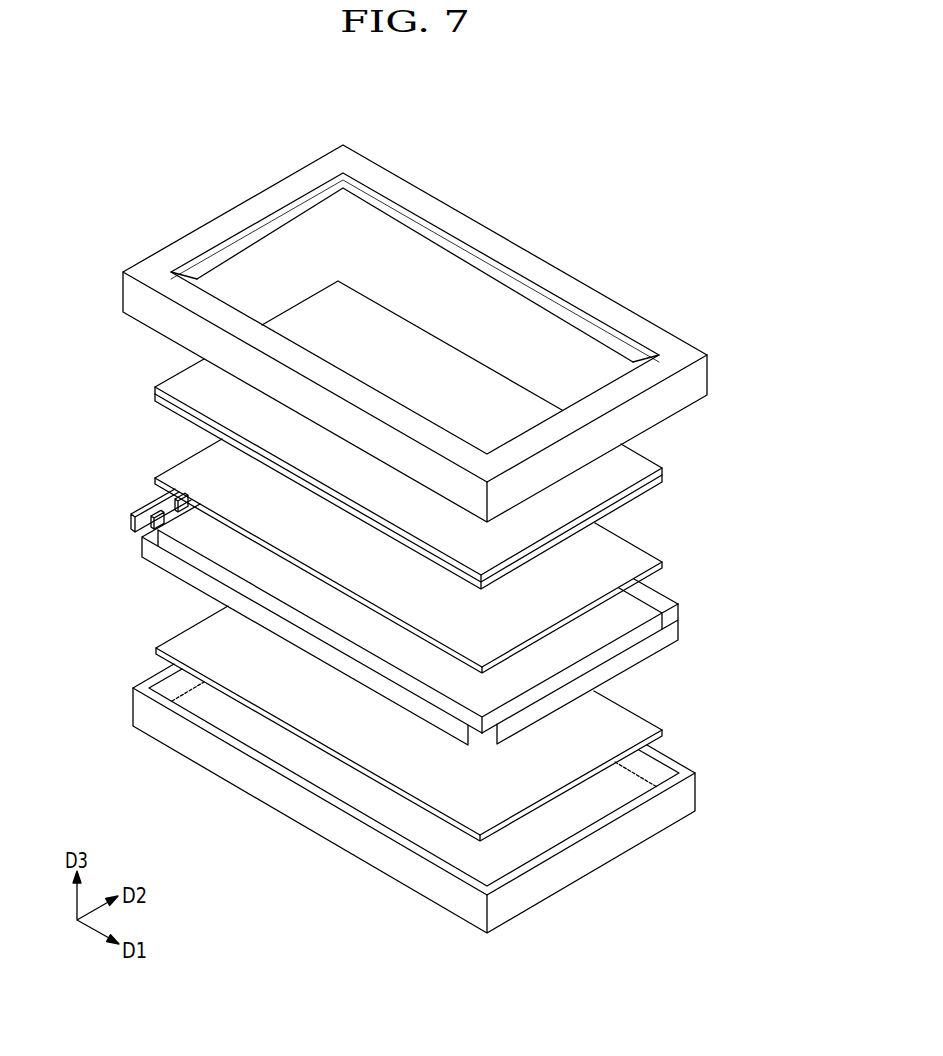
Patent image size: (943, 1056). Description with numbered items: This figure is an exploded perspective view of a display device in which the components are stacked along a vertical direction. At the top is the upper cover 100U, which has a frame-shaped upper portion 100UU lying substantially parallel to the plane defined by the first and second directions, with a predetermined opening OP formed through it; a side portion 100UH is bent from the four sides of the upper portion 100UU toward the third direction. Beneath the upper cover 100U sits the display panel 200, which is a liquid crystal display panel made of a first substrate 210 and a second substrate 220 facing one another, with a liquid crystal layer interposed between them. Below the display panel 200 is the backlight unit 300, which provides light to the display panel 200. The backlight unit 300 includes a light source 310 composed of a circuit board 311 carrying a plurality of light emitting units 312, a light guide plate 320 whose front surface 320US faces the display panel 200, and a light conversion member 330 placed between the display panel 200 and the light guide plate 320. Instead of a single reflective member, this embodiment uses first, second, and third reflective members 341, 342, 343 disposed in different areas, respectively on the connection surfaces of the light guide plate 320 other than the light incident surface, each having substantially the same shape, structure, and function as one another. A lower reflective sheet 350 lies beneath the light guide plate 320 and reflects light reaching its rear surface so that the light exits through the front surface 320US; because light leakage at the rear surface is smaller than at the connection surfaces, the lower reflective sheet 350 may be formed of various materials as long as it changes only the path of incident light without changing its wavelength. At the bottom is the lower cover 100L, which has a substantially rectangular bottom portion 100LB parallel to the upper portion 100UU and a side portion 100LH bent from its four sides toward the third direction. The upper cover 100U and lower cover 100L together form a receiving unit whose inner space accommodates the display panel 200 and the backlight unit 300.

The opening OP is at (473, 308).
The upper cover 100U is at (451, 333).
The upper portion 100UU is at (660, 337).
The side portion 100UH is at (693, 383).
The display panel 200 is at (471, 435).
The first substrate 210 is at (662, 477).
The second substrate 220 is at (633, 462).
The backlight unit 300 is at (380, 640).
The light source 310 is at (102, 514).
The circuit board 311 is at (137, 522).
The light emitting units 312 is at (158, 505).
The light guide plate 320 is at (404, 689).
The front surface 320US is at (362, 629).
The light conversion member 330 is at (633, 557).
The first reflective member 341 is at (673, 630).
The second reflective member 342 is at (397, 695).
The third reflective member 343 is at (658, 594).
The lower reflective sheet 350 is at (633, 723).
The lower cover 100L is at (435, 802).
The bottom portion 100LB is at (527, 837).
The side portion 100LH is at (627, 835).